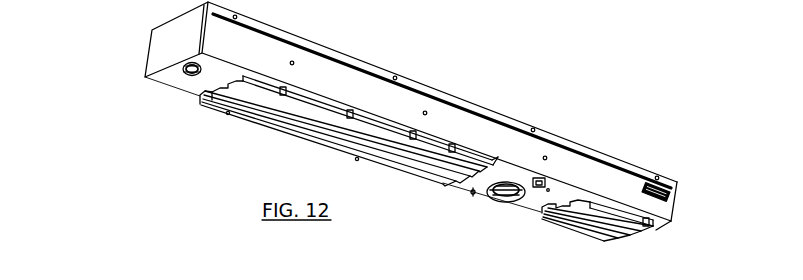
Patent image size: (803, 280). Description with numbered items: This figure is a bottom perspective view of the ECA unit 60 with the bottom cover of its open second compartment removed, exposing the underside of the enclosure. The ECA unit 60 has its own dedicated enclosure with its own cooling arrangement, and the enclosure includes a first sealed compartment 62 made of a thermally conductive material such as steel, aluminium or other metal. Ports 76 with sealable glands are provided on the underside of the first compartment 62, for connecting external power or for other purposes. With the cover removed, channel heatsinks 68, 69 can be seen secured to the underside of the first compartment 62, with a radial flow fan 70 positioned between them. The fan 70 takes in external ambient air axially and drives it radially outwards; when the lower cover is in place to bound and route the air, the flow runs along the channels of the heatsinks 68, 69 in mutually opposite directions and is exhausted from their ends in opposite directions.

The ECA unit 60 is at (469, 62).
The first sealed compartment 62 is at (163, 45).
The channel heatsink 68 is at (252, 107).
The channel heatsink 69 is at (587, 217).
The radial flow fan 70 is at (500, 198).
The ports 76 is at (182, 70).